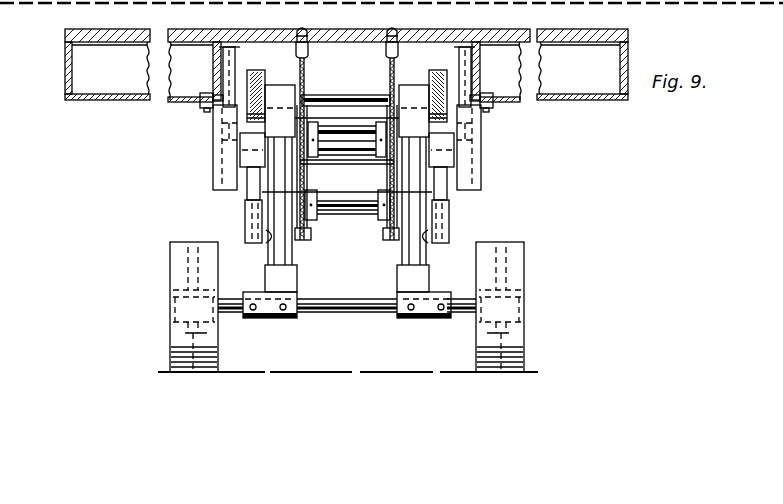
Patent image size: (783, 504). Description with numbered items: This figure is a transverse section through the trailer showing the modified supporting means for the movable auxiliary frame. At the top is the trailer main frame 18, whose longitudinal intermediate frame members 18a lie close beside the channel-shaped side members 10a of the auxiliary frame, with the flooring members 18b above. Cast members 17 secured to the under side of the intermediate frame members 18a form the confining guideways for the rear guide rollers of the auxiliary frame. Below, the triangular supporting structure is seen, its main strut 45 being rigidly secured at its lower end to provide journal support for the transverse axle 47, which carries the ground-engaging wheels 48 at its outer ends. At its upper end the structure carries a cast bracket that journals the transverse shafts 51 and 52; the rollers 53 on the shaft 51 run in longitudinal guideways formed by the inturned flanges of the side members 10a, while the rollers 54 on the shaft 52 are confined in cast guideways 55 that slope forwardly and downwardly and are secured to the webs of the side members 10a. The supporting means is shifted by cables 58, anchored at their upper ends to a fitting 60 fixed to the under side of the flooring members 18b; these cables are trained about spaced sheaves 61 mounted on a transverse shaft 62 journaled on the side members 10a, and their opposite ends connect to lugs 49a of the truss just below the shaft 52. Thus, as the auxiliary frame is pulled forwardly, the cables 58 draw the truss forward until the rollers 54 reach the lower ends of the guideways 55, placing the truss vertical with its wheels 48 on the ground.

The side member of the auxiliary frame 10a is at (229, 71).
The cast member 17 is at (213, 160).
The trailer main frame 18 is at (64, 82).
The intermediate frame member 18a is at (214, 66).
The flooring members 18b is at (468, 31).
The main strut 45 is at (402, 250).
The transverse axle 47 is at (326, 307).
The ground-engaging wheels 48 is at (171, 263).
The lug 49a is at (405, 233).
The transverse shaft 51 is at (327, 98).
The transverse shaft 52 is at (339, 206).
The rollers 53 is at (259, 92).
The rollers 54 is at (262, 211).
The cast guideway 55 is at (250, 178).
The cables 58 is at (388, 72).
The fitting 60 is at (391, 39).
The sheaves 61 is at (383, 133).
The transverse shaft 62 is at (341, 163).